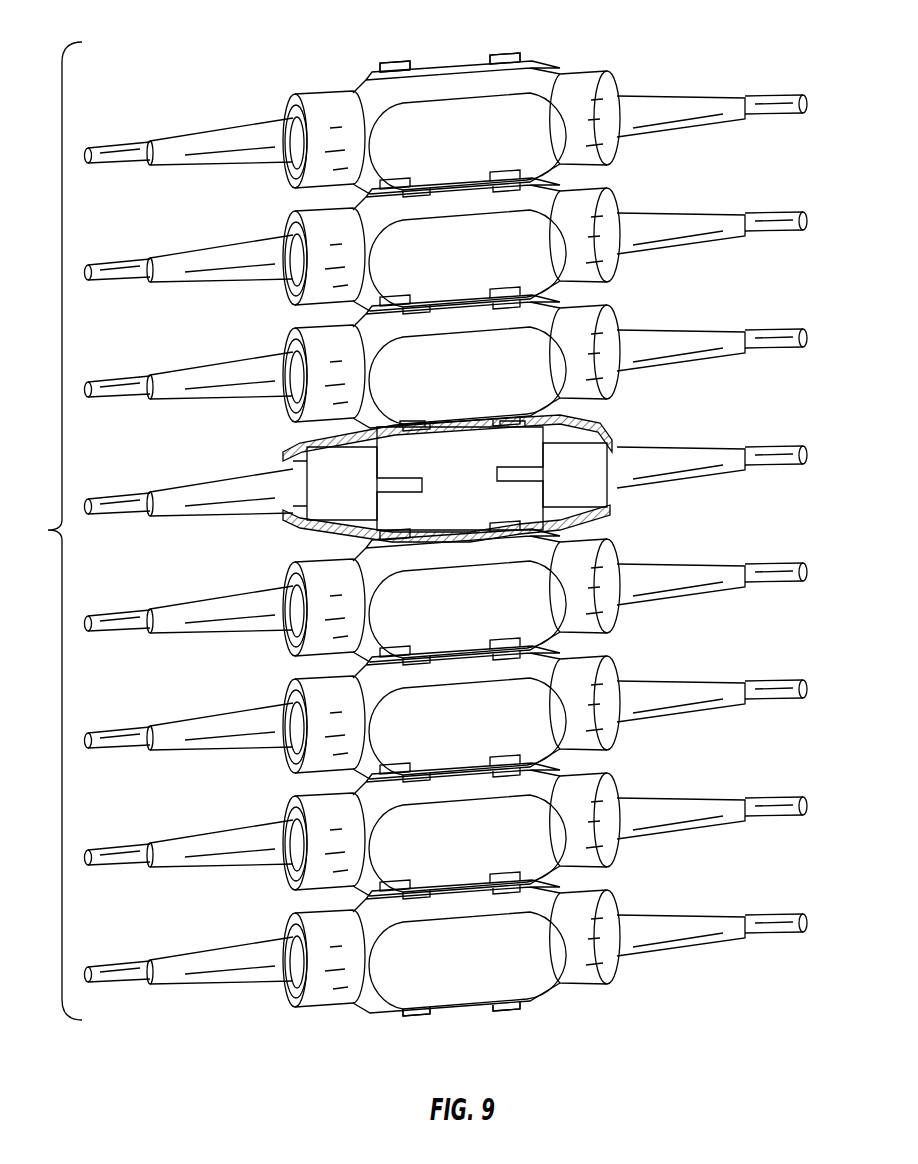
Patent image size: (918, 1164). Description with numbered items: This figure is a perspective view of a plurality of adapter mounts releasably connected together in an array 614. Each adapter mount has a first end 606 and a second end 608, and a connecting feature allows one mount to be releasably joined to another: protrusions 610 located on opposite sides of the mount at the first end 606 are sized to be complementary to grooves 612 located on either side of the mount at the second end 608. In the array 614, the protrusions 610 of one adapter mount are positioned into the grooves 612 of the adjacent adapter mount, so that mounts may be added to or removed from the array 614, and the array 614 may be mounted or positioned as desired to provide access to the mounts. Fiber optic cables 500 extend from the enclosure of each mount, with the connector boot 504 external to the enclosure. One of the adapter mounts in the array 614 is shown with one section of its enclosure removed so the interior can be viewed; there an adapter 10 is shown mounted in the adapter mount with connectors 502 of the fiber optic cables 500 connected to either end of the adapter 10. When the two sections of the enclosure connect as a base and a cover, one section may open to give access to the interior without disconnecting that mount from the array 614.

The adapter 10 is at (461, 511).
The fiber optic cables 500 is at (117, 148).
The connectors 502 is at (362, 502).
The connector boot 504 is at (221, 128).
The first end 606 is at (315, 93).
The second end 608 is at (590, 72).
The protrusions 610 is at (394, 60).
The grooves 612 is at (492, 56).
The array 614 is at (47, 531).